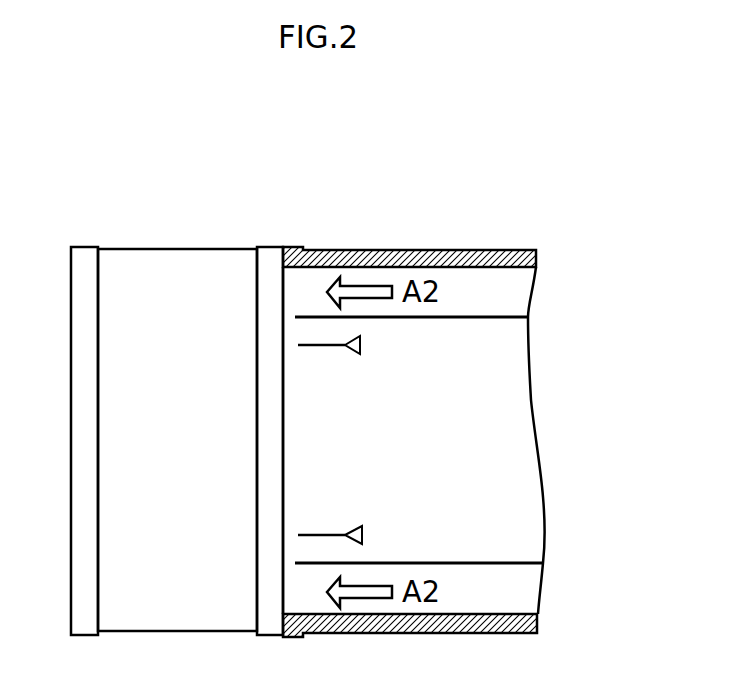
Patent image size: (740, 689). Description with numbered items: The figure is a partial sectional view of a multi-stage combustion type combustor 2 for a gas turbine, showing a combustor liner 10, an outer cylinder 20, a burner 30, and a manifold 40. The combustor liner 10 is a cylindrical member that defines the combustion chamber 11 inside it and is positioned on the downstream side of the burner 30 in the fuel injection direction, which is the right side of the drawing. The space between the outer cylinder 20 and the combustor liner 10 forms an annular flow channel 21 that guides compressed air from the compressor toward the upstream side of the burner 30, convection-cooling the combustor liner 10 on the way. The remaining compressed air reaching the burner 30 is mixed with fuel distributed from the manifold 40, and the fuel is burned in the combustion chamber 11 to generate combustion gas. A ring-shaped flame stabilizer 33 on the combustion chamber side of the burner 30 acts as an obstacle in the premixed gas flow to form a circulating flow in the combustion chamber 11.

The combustor 2 is at (335, 218).
The combustor liner 10 is at (470, 316).
The combustion chamber 11 is at (515, 510).
The outer cylinder 20 is at (447, 250).
The annular flow channel 21 is at (512, 605).
The burner 30 is at (289, 443).
The flame stabilizer 33 is at (362, 344).
The manifold 40 is at (178, 247).